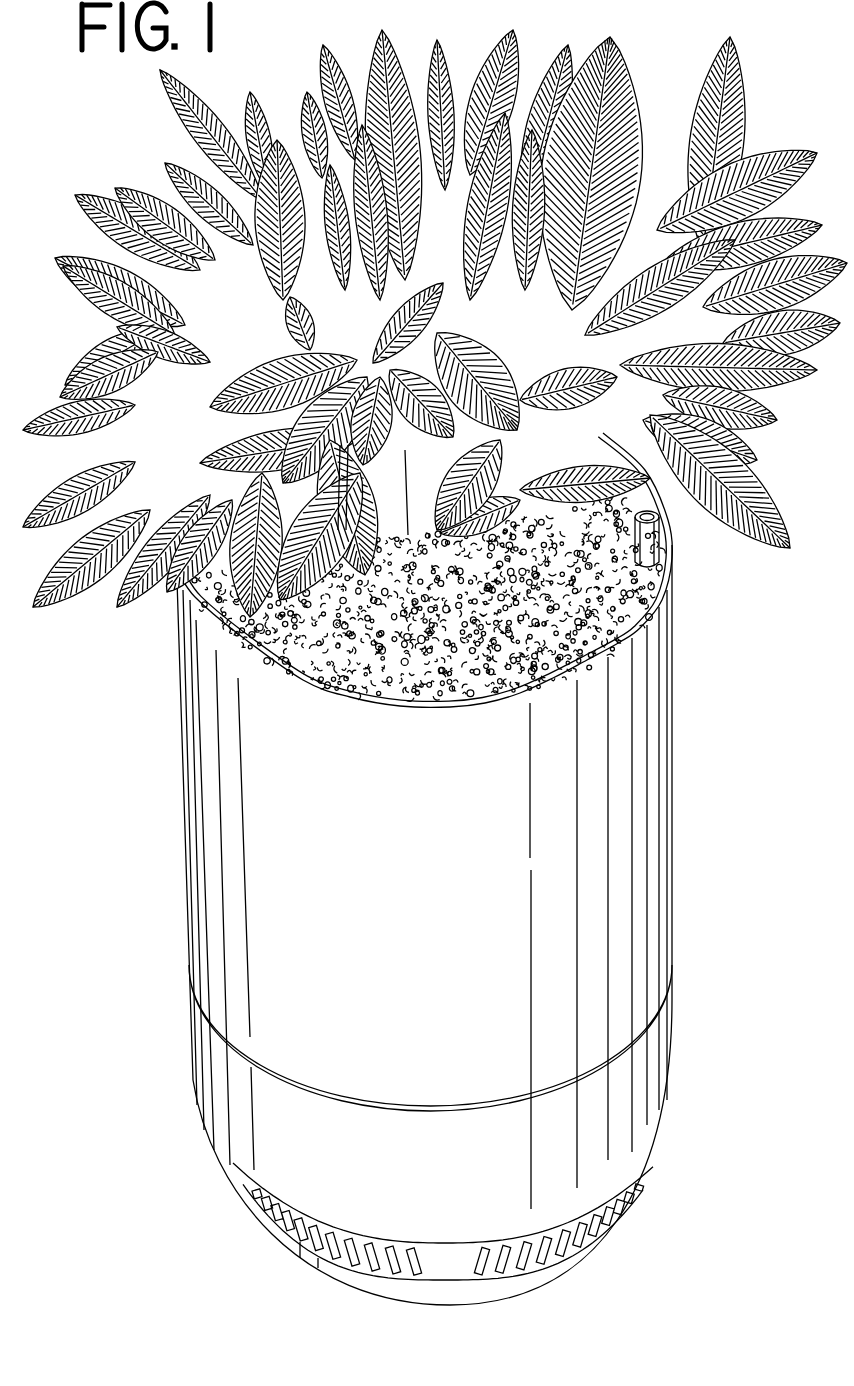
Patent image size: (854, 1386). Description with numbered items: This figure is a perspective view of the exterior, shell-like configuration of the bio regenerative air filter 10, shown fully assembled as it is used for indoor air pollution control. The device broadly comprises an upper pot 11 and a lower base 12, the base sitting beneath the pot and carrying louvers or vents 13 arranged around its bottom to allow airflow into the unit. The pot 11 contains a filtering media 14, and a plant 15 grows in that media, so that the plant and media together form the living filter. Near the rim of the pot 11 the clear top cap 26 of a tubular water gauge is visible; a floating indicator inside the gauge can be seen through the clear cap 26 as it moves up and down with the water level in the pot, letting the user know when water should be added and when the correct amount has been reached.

The bio regenerative air filter 10 is at (418, 869).
The upper pot 11 is at (675, 770).
The lower base 12 is at (672, 1046).
The louvers or vents 13 is at (584, 1215).
The filtering media 14 is at (594, 580).
The plant 15 is at (146, 606).
The clear top cap 26 is at (660, 540).